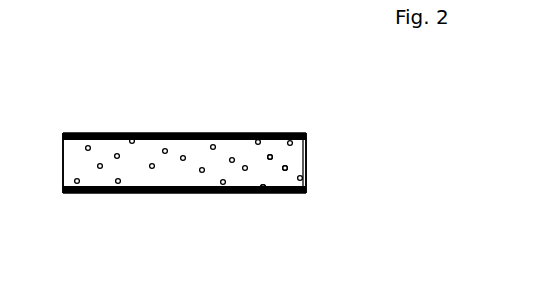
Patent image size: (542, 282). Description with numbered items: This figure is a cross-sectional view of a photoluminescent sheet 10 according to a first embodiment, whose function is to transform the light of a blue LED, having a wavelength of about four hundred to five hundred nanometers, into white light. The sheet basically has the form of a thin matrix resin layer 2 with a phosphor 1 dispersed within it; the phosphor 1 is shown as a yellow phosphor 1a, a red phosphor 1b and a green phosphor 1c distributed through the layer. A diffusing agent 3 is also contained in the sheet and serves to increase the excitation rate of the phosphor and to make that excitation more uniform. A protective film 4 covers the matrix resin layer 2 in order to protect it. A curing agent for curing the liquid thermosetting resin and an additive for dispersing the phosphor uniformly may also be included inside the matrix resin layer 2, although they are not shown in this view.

The phosphor 1 is at (287, 89).
The yellow phosphor 1a is at (289, 145).
The red phosphor 1b is at (275, 134).
The green phosphor 1c is at (307, 155).
The matrix resin layer 2 is at (282, 193).
The diffusing agent 3 is at (283, 172).
The protective film 4 is at (63, 137).
The photoluminescent sheet 10 is at (324, 207).